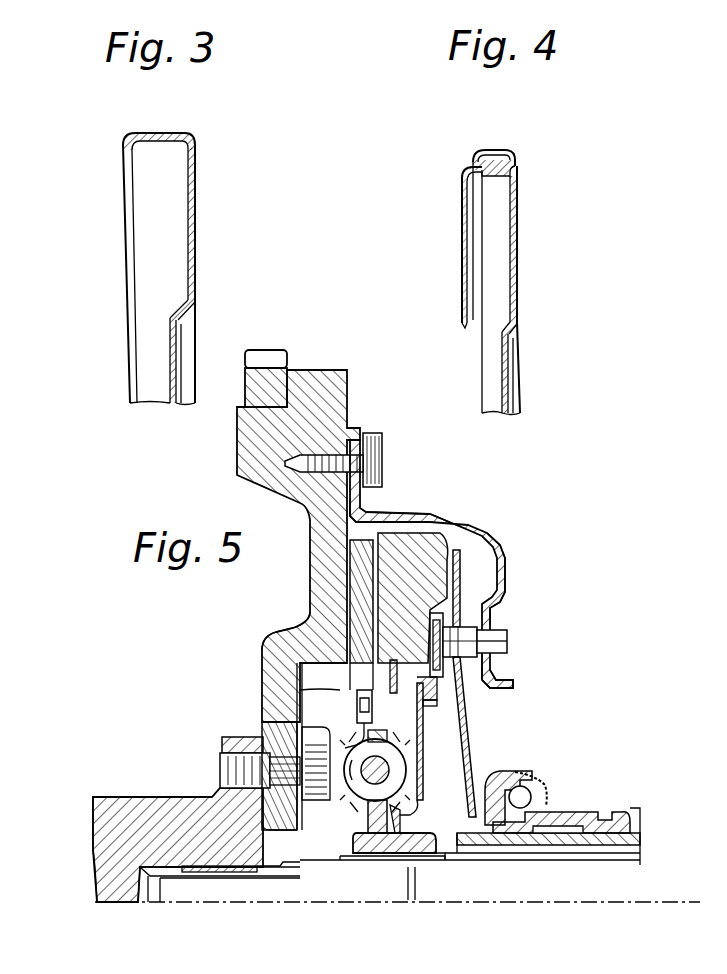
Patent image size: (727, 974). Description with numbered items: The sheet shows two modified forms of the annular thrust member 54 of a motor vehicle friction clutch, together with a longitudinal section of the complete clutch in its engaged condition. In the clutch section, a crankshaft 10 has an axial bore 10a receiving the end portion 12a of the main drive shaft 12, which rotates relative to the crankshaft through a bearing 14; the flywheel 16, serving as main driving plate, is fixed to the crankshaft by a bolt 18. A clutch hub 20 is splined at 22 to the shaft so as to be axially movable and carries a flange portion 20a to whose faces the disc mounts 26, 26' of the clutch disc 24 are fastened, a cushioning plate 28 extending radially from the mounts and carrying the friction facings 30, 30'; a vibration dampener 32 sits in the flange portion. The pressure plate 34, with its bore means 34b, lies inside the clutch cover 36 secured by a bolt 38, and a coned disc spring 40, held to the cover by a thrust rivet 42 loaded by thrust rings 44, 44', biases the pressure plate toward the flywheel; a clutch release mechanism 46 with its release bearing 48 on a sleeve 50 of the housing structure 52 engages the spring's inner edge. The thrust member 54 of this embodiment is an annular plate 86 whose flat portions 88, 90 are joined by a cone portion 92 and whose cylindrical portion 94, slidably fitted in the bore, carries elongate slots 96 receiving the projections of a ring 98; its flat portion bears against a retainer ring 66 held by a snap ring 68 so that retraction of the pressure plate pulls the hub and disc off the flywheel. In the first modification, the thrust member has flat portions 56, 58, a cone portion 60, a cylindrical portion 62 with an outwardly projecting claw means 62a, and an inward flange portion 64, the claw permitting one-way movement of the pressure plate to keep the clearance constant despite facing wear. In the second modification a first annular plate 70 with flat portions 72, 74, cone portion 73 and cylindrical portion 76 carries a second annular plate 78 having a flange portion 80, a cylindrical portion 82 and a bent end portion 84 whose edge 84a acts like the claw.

In FIG. 5, the crankshaft 10 is at (175, 852).
In FIG. 5, the axial bore 10a is at (120, 866).
In FIG. 5, the main drive shaft 12 is at (390, 888).
In FIG. 5, the end portion 12a is at (243, 888).
In FIG. 5, the bearing 14 is at (197, 890).
In FIG. 5, the flywheel 16 is at (317, 547).
In FIG. 5, the bolt 18 is at (234, 743).
In FIG. 5, the clutch hub 20 is at (303, 800).
In FIG. 5, the flange portion 20a is at (345, 842).
In FIG. 5, the spline 22 is at (391, 869).
In FIG. 5, the clutch disc 24 is at (293, 690).
In FIG. 5, the clutch disc mount 26 is at (309, 687).
In FIG. 5, the clutch disc mount 26' is at (427, 737).
In FIG. 5, the cushioning plate 28 is at (363, 676).
In FIG. 5, the clutch friction facing 30 is at (478, 574).
In FIG. 5, the clutch friction facing 30' is at (400, 499).
In FIG. 5, the vibration dampener 32 is at (224, 729).
In FIG. 5, the pressure plate 34 is at (434, 521).
In FIG. 5, the bore means 34b is at (512, 652).
In FIG. 5, the clutch cover 36 is at (482, 533).
In FIG. 5, the bolt 38 is at (375, 433).
In FIG. 5, the coned disc spring 40 is at (466, 723).
In FIG. 5, the thrust rivet 42 is at (489, 645).
In FIG. 5, the thrust ring 44 is at (499, 588).
In FIG. 5, the thrust ring 44' is at (519, 608).
In FIG. 5, the clutch release mechanism 46 is at (559, 776).
In FIG. 5, the clutch release bearing 48 is at (528, 773).
In FIG. 5, the sleeve 50 is at (597, 811).
In FIG. 5, the clutch housing structure 52 is at (631, 816).
In FIG. 3, the annular thrust member 54 is at (176, 248).
In FIG. 4, the annular thrust member 54 is at (505, 258).
In FIG. 5, the annular thrust member 54 is at (533, 772).
In FIG. 3, the flat portion 56 is at (204, 233).
In FIG. 3, the flat portion 58 is at (178, 327).
In FIG. 3, the cone portion 60 is at (194, 310).
In FIG. 3, the cylindrical portion 62 is at (168, 142).
In FIG. 3, the claw means 62a is at (158, 132).
In FIG. 3, the flange portion 64 is at (124, 150).
In FIG. 5, the retainer ring 66 is at (448, 856).
In FIG. 5, the snap ring 68 is at (437, 860).
In FIG. 4, the first annular plate 70 is at (543, 289).
In FIG. 4, the flat portion 72 is at (517, 223).
In FIG. 4, the cone portion 73 is at (517, 329).
In FIG. 4, the flat portion 74 is at (508, 341).
In FIG. 4, the cylindrical portion 76 is at (496, 176).
In FIG. 4, the second annular plate 78 is at (446, 247).
In FIG. 4, the flange portion 80 is at (462, 182).
In FIG. 4, the cylindrical portion 82 is at (471, 139).
In FIG. 4, the bent end portion 84 is at (497, 150).
In FIG. 4, the edge 84a is at (476, 150).
In FIG. 5, the annular plate 86 is at (468, 758).
In FIG. 5, the flat portion 88 is at (446, 664).
In FIG. 5, the flat portion 90 is at (400, 860).
In FIG. 5, the cone portion 92 is at (429, 800).
In FIG. 5, the cylindrical portion 94 is at (494, 690).
In FIG. 5, the elongate slots 96 is at (302, 623).
In FIG. 5, the ring 98 is at (421, 706).